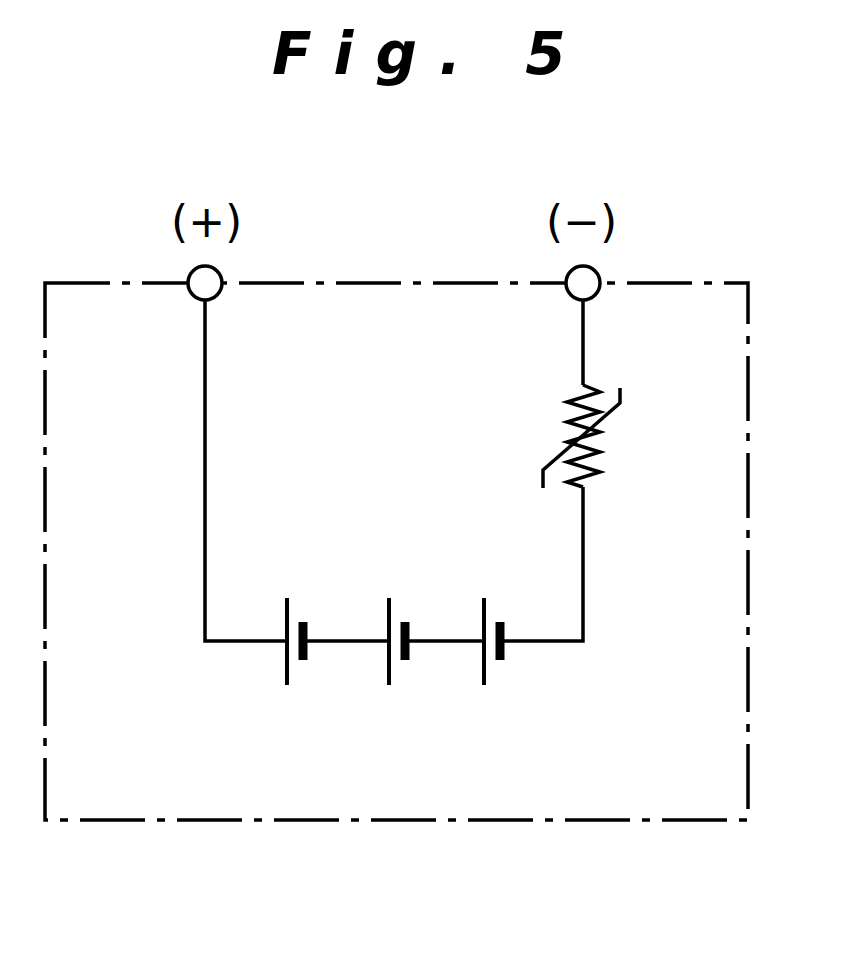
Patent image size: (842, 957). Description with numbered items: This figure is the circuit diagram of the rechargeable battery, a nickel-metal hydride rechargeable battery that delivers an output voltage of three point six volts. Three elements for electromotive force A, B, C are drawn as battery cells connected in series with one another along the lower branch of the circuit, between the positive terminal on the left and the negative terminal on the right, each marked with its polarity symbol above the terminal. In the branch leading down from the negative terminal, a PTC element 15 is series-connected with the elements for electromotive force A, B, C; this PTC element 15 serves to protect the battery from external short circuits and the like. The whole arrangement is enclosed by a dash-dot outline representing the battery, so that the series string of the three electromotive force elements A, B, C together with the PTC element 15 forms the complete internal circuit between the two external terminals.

The PTC element 15 is at (605, 442).
The element for electromotive force A is at (295, 670).
The element for electromotive force B is at (397, 670).
The element for electromotive force C is at (494, 670).